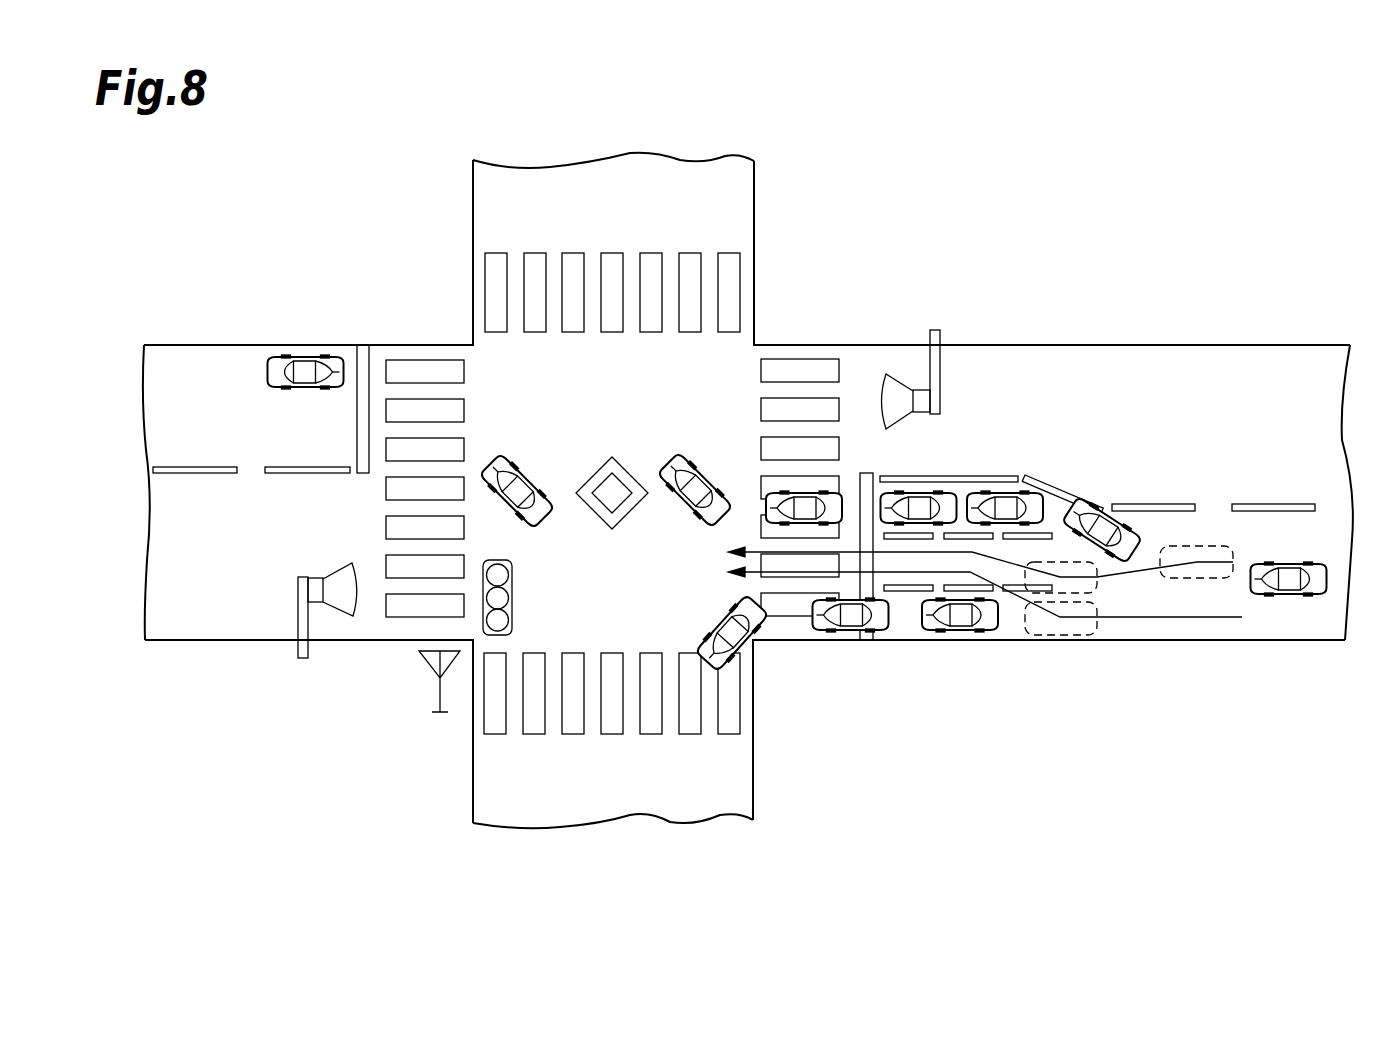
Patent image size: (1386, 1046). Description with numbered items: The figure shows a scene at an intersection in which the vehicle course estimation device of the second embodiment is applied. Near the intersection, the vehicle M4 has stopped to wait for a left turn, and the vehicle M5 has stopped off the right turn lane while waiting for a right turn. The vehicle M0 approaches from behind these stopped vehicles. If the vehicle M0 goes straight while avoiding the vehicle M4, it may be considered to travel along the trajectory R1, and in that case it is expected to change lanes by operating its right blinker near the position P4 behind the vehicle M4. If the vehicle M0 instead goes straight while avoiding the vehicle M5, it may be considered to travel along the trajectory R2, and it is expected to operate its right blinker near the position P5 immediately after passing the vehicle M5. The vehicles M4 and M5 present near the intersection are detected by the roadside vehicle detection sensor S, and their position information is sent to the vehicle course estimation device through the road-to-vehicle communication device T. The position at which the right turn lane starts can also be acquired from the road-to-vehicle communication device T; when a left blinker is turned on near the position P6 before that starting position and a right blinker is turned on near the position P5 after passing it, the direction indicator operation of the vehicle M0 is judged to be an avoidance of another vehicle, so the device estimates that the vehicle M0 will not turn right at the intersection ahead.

The vehicle detection sensor S is at (933, 330).
The road-to-vehicle communication device T is at (438, 695).
The vehicle M0 is at (1293, 596).
The vehicle M4 is at (970, 631).
The vehicle M5 is at (1108, 505).
The position P4 is at (1070, 636).
The position P5 is at (1052, 562).
The position P6 is at (1223, 546).
The trajectory R1 is at (1200, 618).
The trajectory R2 is at (1149, 568).